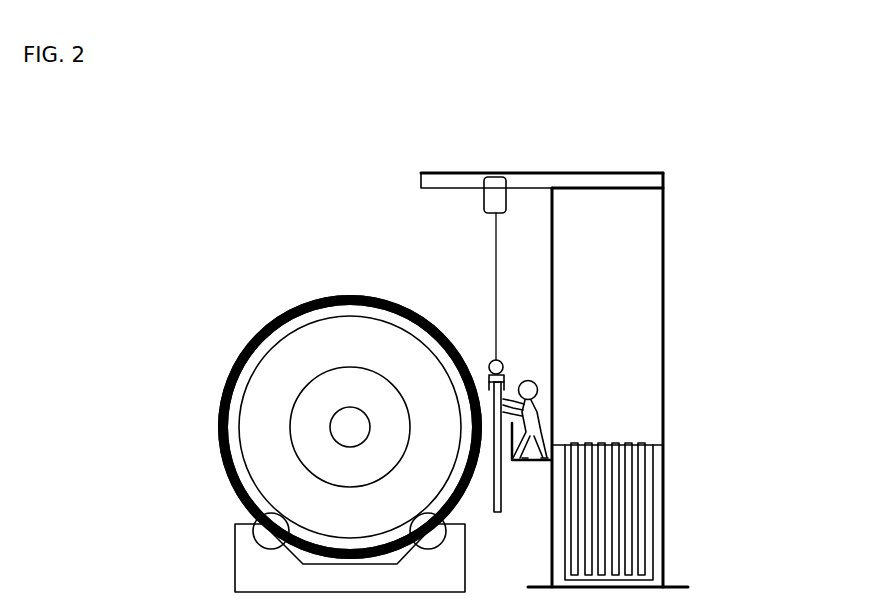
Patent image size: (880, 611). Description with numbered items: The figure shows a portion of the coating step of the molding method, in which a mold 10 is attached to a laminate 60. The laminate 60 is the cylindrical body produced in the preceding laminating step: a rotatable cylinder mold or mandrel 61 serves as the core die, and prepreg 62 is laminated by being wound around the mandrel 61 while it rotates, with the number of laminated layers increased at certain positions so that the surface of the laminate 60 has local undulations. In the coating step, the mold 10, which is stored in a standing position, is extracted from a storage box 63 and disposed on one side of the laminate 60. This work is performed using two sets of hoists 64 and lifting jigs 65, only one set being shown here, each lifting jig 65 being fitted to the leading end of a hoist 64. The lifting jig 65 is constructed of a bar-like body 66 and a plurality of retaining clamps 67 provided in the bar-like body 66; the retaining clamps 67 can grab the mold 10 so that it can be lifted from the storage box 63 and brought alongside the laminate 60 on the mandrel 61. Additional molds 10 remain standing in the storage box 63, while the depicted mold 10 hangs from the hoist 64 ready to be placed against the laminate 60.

The mold 10 is at (503, 500).
The laminate 60 is at (338, 297).
The mandrel 61 is at (265, 349).
The prepreg 62 is at (350, 427).
The storage box 63 is at (655, 508).
The hoist 64 is at (494, 185).
The lifting jig 65 is at (542, 340).
The bar-like body 66 is at (503, 358).
The retaining clamp 67 is at (505, 378).